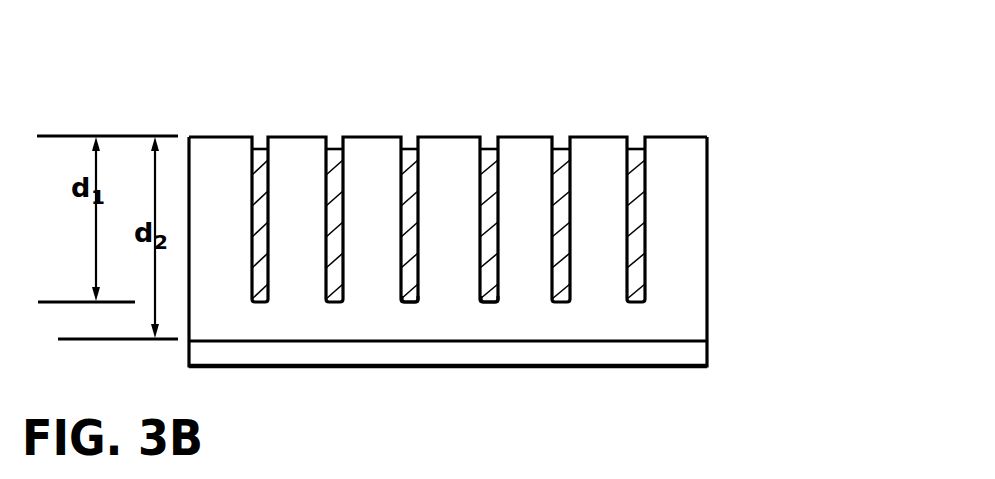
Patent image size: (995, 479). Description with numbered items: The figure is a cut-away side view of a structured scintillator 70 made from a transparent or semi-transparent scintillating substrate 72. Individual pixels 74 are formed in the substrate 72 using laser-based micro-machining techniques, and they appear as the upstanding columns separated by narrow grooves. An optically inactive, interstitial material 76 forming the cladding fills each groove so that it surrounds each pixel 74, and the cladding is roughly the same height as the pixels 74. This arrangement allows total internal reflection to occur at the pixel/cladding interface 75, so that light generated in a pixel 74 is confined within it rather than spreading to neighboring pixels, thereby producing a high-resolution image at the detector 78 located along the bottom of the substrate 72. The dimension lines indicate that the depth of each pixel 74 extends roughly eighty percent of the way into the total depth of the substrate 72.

The structured scintillator 70 is at (531, 44).
The scintillating substrate 72 is at (692, 175).
The pixel 74 is at (368, 147).
The interstitial material 76 is at (410, 150).
The pixel/cladding interface 75 is at (478, 268).
The detector 78 is at (692, 358).